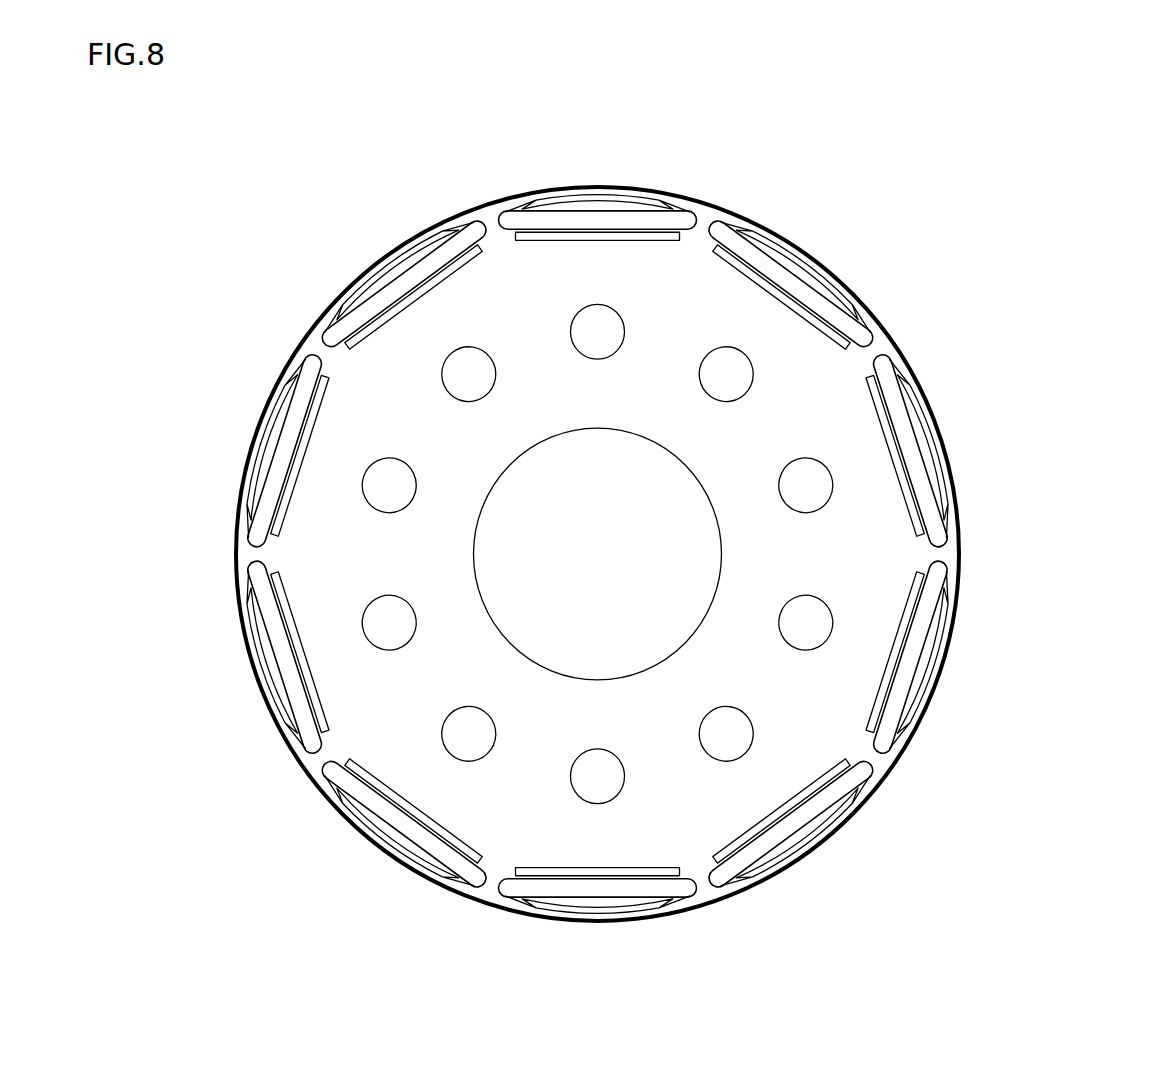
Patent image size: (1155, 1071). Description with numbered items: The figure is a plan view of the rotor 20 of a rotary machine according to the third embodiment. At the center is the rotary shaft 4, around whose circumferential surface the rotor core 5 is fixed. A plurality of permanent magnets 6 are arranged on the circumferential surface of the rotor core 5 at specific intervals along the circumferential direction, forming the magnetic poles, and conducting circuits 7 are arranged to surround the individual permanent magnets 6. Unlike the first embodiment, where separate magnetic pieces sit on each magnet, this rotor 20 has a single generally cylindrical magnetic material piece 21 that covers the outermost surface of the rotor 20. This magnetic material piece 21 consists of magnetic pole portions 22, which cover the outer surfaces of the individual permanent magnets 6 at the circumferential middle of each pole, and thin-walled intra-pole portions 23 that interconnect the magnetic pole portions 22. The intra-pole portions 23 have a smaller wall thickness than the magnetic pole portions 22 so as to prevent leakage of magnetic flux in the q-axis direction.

The rotor 20 is at (372, 210).
The magnetic material piece 21 is at (1105, 453).
The magnetic pole portions 22 is at (948, 482).
The intra-pole portions 23 is at (952, 560).
The permanent magnets 6 is at (925, 446).
The conducting circuits 7 is at (905, 667).
The rotor core 5 is at (815, 395).
The rotary shaft 4 is at (710, 651).